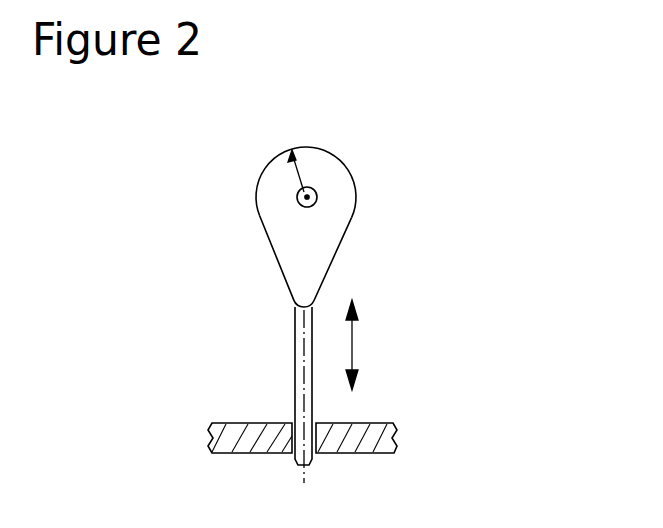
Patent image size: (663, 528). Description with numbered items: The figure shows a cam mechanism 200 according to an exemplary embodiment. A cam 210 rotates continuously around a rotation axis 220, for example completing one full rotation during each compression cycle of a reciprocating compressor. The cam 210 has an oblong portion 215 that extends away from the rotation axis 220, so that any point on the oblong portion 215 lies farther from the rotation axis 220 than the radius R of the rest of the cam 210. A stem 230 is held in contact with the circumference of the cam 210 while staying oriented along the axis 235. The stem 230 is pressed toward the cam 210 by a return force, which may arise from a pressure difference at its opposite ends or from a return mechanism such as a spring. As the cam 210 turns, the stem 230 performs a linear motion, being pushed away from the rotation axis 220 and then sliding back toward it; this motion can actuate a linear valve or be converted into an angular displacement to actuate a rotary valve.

The cam mechanism 200 is at (198, 159).
The cam 210 is at (310, 147).
The oblong portion 215 is at (313, 282).
The rotation axis 220 is at (297, 199).
The stem 230 is at (295, 352).
The axis 235 is at (305, 473).